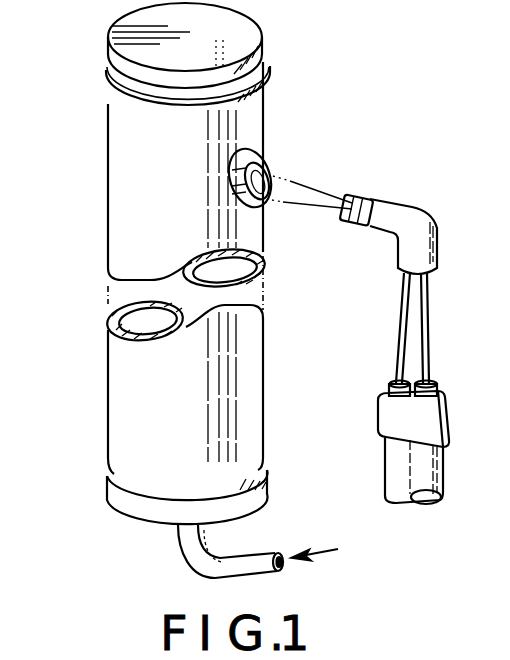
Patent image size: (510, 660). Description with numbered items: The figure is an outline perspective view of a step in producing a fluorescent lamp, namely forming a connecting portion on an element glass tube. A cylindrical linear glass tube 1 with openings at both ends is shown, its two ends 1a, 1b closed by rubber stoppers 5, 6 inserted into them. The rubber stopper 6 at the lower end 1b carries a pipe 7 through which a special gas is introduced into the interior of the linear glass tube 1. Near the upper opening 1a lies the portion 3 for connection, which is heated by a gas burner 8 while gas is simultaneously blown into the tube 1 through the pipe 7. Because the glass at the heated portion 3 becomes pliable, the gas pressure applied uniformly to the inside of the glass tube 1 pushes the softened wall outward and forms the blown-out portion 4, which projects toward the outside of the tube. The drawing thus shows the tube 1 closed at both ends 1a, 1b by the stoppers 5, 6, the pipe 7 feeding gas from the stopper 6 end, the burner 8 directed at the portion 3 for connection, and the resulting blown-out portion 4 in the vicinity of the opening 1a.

The linear glass tube 1 is at (108, 226).
The end of the linear glass tube 1a is at (108, 100).
The end of the linear glass tube 1b is at (118, 458).
The portion for connection 3 is at (270, 200).
The blown-out portion 4 is at (265, 164).
The rubber stopper 5 is at (255, 28).
The rubber stopper 6 is at (133, 505).
The pipe 7 is at (262, 557).
The burner 8 is at (421, 200).